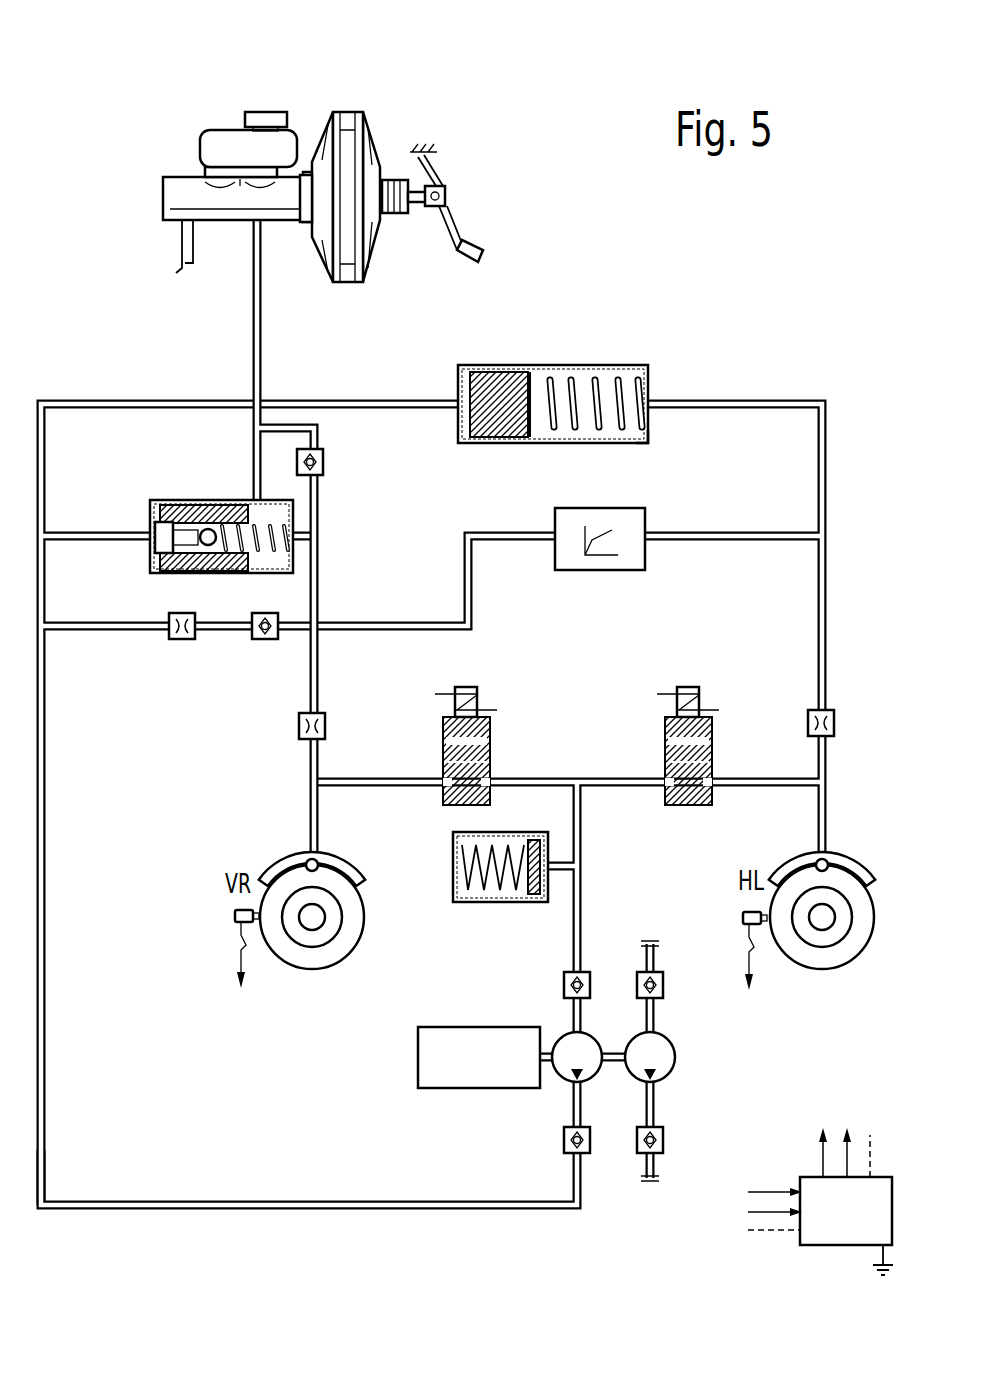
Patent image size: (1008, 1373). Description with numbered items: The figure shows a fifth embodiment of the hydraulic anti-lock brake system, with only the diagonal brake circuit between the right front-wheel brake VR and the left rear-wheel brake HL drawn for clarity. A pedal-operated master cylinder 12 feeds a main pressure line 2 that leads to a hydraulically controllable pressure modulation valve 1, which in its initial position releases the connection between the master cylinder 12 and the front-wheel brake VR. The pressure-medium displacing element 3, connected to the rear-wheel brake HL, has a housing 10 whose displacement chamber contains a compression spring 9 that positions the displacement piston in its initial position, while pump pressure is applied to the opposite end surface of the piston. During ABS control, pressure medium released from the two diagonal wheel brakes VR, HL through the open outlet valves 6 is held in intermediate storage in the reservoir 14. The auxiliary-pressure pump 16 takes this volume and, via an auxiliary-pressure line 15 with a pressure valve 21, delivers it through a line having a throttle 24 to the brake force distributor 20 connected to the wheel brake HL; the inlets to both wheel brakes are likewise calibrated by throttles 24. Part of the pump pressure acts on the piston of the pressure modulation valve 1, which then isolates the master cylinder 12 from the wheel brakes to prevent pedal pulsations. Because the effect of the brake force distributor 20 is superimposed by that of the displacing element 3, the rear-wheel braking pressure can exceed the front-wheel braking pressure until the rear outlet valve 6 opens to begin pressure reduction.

The pressure modulation valve 1 is at (194, 500).
The main pressure line 2 is at (253, 318).
The pressure-medium displacing element 3 is at (553, 363).
The pressure modulation valve 6 is at (490, 725).
The compression spring 9 is at (600, 380).
The housing 10 is at (648, 440).
The master cylinder 12 is at (198, 104).
The reservoir 14 is at (460, 903).
The auxiliary-pressure line 15 is at (314, 1211).
The auxiliary-pressure pump 16 is at (636, 1035).
The brake force distributor 20 is at (645, 561).
The pressure valve 21 is at (590, 1135).
The throttle 24 is at (182, 640).